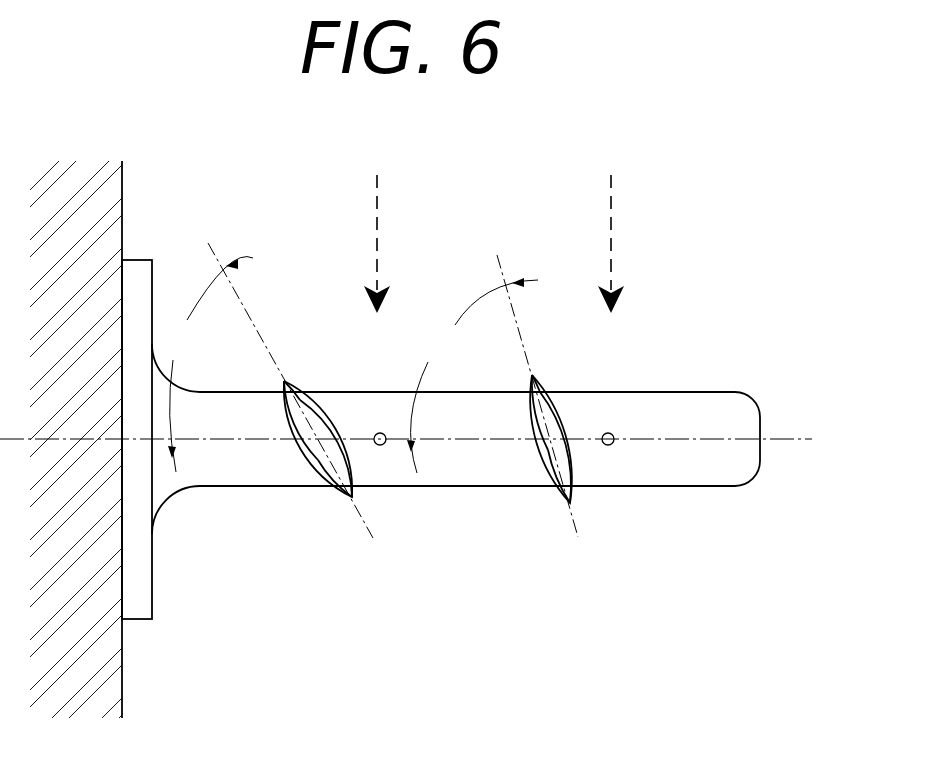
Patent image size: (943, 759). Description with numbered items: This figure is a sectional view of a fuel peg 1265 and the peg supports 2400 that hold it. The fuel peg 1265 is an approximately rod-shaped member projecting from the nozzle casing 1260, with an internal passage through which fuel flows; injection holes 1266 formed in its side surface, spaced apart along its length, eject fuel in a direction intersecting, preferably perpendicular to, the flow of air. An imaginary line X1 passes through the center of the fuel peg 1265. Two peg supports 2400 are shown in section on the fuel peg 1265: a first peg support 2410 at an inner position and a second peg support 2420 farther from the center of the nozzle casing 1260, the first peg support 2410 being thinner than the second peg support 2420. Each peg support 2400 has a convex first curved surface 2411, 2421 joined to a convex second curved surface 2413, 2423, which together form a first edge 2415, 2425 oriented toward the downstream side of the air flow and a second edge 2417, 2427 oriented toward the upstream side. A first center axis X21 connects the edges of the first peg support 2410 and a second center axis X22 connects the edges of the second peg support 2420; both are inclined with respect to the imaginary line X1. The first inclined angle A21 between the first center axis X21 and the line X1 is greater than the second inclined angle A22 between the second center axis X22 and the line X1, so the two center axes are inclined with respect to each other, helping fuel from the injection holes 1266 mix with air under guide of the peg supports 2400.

The nozzle casing 1260 is at (73, 212).
The fuel peg 1265 is at (737, 417).
The injection hole 1266 is at (617, 438).
The peg support 2400 is at (423, 484).
The second peg support 2420 is at (364, 496).
The first curved surface 2421 is at (333, 418).
The second curved surface 2423 is at (287, 418).
The first edge 2425 is at (350, 498).
The second edge 2427 is at (286, 384).
The first peg support 2410 is at (552, 497).
The first curved surface 2411 is at (560, 420).
The second curved surface 2413 is at (530, 417).
The first edge 2415 is at (596, 520).
The second edge 2417 is at (533, 372).
The imaginary line X1 is at (424, 440).
The first center axis X21 is at (526, 380).
The second center axis X22 is at (278, 374).
The first inclined angle A21 is at (472, 375).
The second inclined angle A22 is at (202, 364).